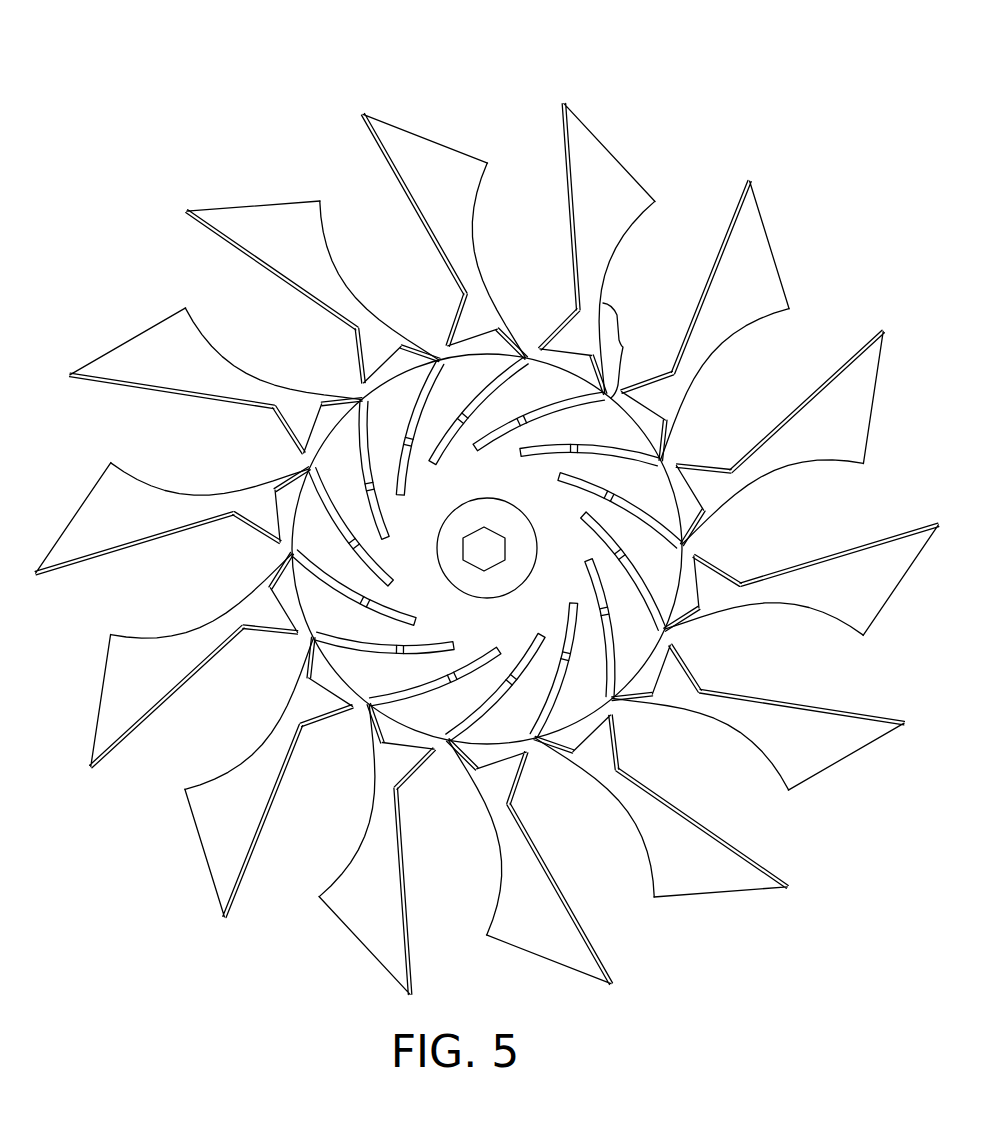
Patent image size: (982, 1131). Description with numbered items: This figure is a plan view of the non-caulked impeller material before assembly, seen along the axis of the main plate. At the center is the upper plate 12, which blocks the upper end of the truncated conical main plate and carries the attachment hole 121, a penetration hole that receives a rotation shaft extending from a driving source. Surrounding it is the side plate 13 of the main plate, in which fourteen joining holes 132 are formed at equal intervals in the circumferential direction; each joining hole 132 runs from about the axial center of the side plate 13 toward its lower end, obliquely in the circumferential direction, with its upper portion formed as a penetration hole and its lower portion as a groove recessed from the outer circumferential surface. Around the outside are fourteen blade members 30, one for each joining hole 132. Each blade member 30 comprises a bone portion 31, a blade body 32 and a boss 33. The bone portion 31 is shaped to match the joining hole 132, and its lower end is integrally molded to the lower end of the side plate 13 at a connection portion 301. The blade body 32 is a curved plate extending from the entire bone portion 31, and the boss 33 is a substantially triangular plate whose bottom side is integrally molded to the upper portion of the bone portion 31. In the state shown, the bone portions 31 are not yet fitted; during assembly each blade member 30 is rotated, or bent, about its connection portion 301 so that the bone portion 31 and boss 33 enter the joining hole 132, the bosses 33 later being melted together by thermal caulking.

The blade member 30 is at (487, 518).
The bone portion 31 is at (632, 347).
The blade body 32 is at (605, 185).
The boss 33 is at (567, 340).
The connection portion 301 is at (603, 398).
The upper plate 12 is at (457, 550).
The attachment hole 121 is at (492, 555).
The side plate 13 is at (517, 707).
The joining hole 132 is at (596, 590).